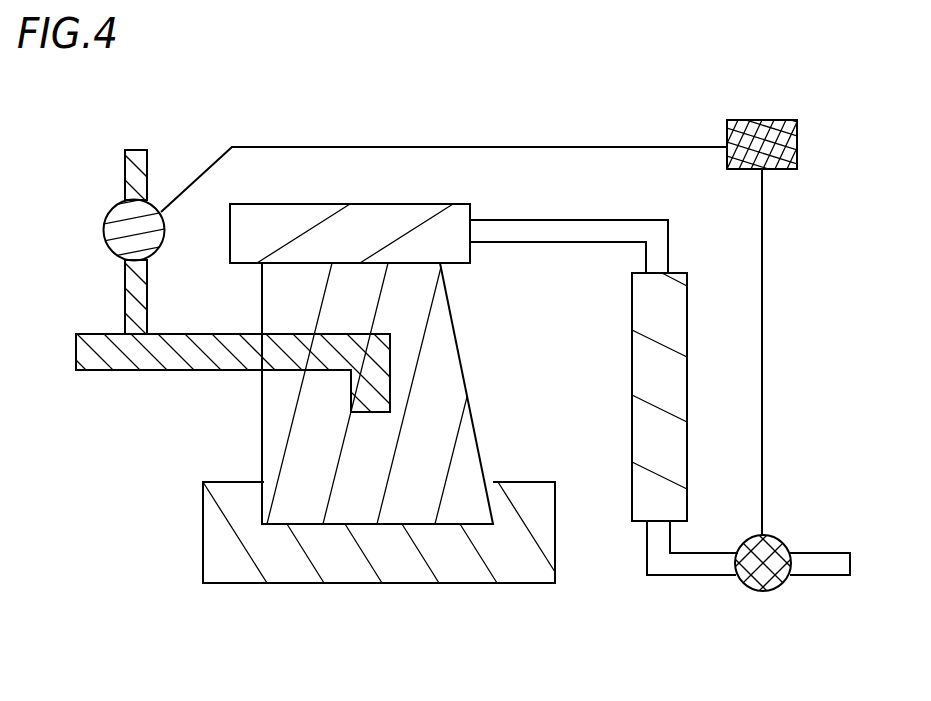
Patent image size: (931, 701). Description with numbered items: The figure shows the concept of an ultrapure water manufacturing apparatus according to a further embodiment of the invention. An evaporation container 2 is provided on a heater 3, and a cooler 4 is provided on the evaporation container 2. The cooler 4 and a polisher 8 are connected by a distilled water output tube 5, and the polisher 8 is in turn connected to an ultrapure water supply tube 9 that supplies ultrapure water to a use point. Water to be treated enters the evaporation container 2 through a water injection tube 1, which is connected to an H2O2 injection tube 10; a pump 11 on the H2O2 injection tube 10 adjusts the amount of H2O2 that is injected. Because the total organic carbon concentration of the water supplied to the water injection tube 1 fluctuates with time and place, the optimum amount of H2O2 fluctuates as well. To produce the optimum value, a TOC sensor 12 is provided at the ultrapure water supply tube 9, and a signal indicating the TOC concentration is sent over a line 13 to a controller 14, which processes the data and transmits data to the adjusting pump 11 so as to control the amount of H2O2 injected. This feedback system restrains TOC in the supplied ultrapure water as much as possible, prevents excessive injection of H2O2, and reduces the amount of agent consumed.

The water injection tube 1 is at (132, 370).
The evaporation container 2 is at (452, 330).
The heater 3 is at (355, 583).
The cooler 4 is at (407, 203).
The distilled water output tube 5 is at (590, 219).
The polisher 8 is at (632, 410).
The ultrapure water supply tube 9 is at (647, 565).
The H2O2 injection tube 10 is at (125, 167).
The pump 11 is at (108, 215).
The TOC sensor 12 is at (778, 540).
The line 13 is at (762, 300).
The controller 14 is at (797, 142).